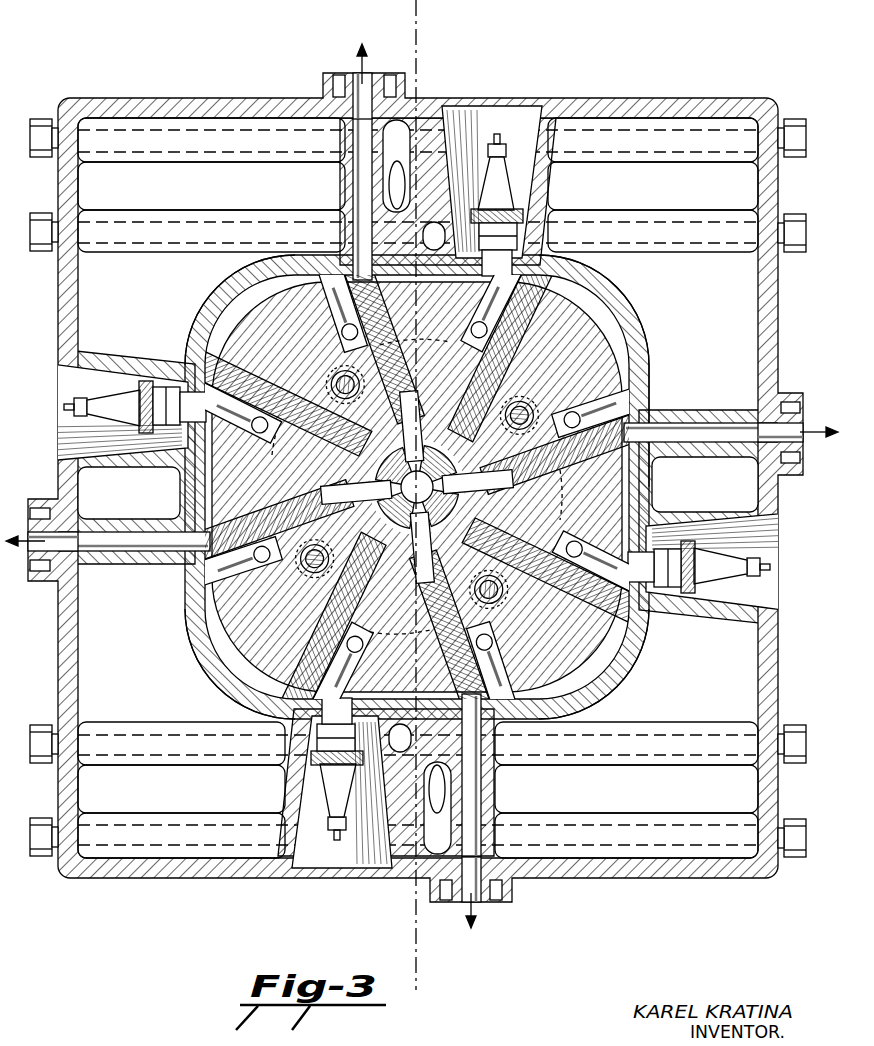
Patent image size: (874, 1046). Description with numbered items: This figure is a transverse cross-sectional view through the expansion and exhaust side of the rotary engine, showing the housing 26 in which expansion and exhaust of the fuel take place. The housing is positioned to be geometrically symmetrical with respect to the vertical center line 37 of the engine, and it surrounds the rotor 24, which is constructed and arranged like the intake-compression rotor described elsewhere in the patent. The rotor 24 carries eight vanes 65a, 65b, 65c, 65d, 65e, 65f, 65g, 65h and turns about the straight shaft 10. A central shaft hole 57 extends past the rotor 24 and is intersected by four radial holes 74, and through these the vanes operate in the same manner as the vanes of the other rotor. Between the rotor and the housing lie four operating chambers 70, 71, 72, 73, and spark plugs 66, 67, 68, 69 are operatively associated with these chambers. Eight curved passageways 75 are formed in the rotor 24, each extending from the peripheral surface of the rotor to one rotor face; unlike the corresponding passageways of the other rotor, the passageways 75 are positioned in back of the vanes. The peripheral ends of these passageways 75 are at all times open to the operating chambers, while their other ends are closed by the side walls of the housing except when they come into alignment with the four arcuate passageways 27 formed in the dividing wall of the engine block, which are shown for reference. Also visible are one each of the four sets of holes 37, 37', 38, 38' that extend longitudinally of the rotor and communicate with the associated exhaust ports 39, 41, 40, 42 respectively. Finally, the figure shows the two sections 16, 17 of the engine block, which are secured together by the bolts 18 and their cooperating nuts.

The straight shaft 10 is at (390, 507).
The engine block section 16 is at (708, 98).
The engine block section 17 is at (151, 98).
The bolts 18 is at (670, 130).
The rotor 24 is at (630, 392).
The housing 26 is at (585, 299).
The arcuate passageways 27 is at (461, 363).
The holes 37 is at (610, 223).
The holes 37' is at (343, 176).
The holes 38 is at (120, 520).
The holes 38' is at (498, 798).
The exhaust port 39 is at (805, 430).
The exhaust port 40 is at (38, 552).
The exhaust port 41 is at (356, 70).
The exhaust port 42 is at (464, 904).
The central shaft hole 57 is at (446, 470).
The vane 65a is at (343, 306).
The vane 65b is at (273, 364).
The vane 65c is at (222, 500).
The vane 65d is at (291, 652).
The vane 65e is at (505, 677).
The vane 65f is at (567, 628).
The vane 65g is at (630, 478).
The vane 65h is at (522, 331).
The spark plug 66 is at (500, 162).
The spark plug 67 is at (111, 421).
The spark plug 68 is at (356, 812).
The spark plug 69 is at (735, 580).
The operating chamber 70 is at (243, 306).
The operating chamber 71 is at (213, 607).
The operating chamber 72 is at (590, 686).
The operating chamber 73 is at (598, 347).
The radial holes 74 is at (398, 452).
The curved passageways 75 is at (346, 332).